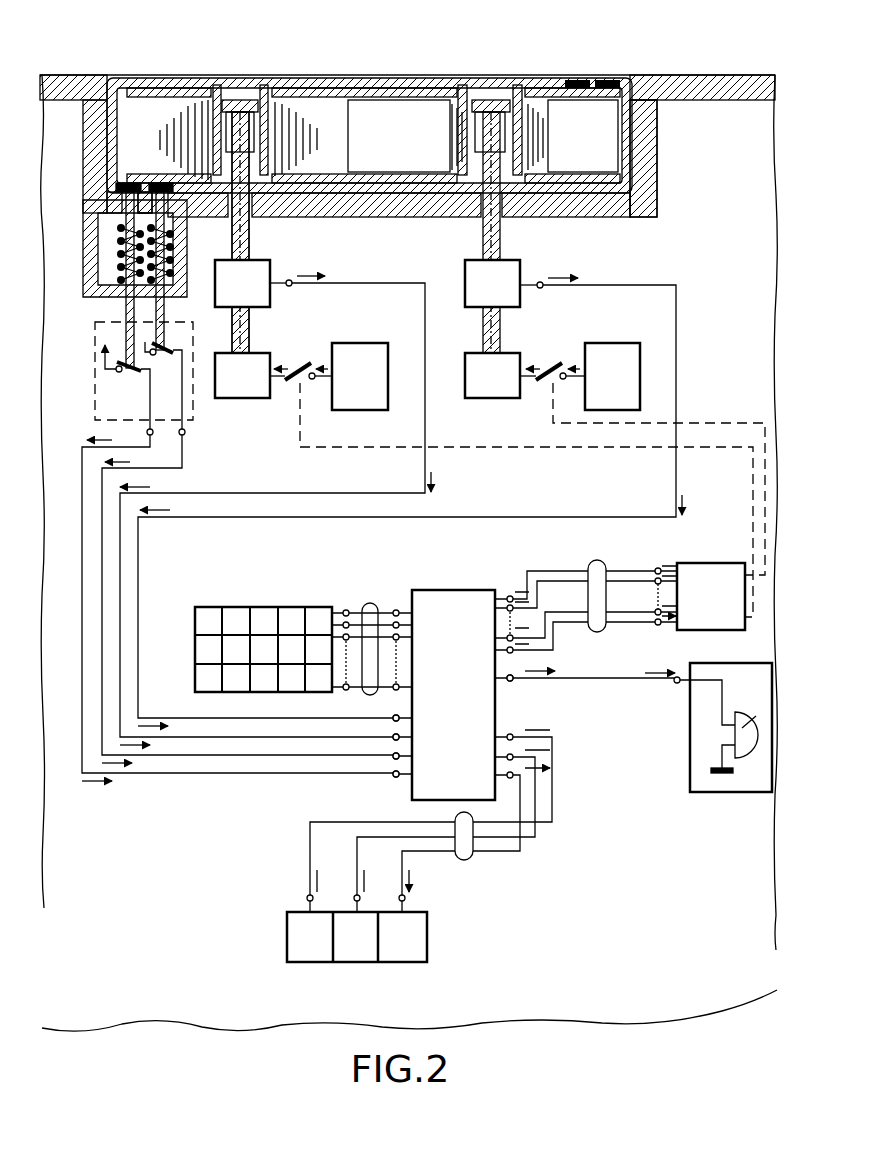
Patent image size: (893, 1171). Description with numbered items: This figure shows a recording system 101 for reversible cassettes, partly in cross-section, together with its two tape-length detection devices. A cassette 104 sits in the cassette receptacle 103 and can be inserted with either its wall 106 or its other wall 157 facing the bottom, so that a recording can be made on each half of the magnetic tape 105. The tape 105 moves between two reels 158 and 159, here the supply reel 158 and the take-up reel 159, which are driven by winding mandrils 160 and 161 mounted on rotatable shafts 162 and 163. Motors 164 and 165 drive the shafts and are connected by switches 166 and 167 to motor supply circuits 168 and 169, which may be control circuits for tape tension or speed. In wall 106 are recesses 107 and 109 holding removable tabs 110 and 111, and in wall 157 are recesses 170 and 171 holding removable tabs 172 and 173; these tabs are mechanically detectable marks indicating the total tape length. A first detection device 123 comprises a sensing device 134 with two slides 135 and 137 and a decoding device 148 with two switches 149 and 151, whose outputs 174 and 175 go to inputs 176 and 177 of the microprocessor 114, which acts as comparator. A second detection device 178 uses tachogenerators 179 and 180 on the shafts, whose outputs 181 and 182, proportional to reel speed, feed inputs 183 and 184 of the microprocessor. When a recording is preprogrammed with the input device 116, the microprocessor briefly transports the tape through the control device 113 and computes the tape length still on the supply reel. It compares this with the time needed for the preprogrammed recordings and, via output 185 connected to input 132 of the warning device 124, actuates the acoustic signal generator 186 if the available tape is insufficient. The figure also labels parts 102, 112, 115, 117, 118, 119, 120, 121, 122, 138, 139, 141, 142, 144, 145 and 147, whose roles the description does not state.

The recording system 101 is at (633, 76).
The housing wall 102 is at (720, 77).
The cassette receptacle 103 is at (116, 77).
The cassette 104 is at (146, 78).
The magnetic tape 105 is at (368, 96).
The wall 106 is at (418, 208).
The recess 107 is at (150, 172).
The recess 109 is at (170, 164).
The removable tab 110 is at (130, 188).
The removable tab 111 is at (162, 192).
The plate 112 is at (346, 214).
The control device 113 is at (702, 570).
The microprocessor 114 is at (444, 600).
The cable 115 is at (369, 603).
The input device 116 is at (261, 604).
The cable 117 is at (596, 563).
The cable 118 is at (466, 856).
The display 119 is at (283, 938).
The display element 120 is at (312, 962).
The display element 121 is at (357, 962).
The display element 122 is at (405, 962).
The detection device 123 is at (203, 405).
The warning device 124 is at (722, 792).
The input 132 is at (674, 683).
The sensing device 134 is at (193, 274).
The slide 135 is at (126, 313).
The slide 137 is at (164, 313).
The contact holder 138 is at (98, 288).
The coil spring 139 is at (120, 258).
The coil spring 141 is at (170, 266).
The spring 142 is at (118, 228).
The spring 144 is at (170, 238).
The contact support 145 is at (140, 196).
The contact 147 is at (164, 190).
The decoding device 148 is at (95, 370).
The switch 149 is at (122, 372).
The switch 151 is at (153, 356).
The wall 157 is at (303, 88).
The reel 158 is at (215, 78).
The reel 159 is at (468, 78).
The winding mandril 160 is at (237, 112).
The winding mandril 161 is at (491, 112).
The rotatable shaft 162 is at (249, 324).
The rotatable shaft 163 is at (500, 324).
The motor 164 is at (262, 400).
The motor 165 is at (470, 395).
The switch 166 is at (304, 365).
The switch 167 is at (546, 365).
The motor supply circuit 168 is at (367, 358).
The motor supply circuit 169 is at (609, 358).
The recess 170 is at (632, 81).
The recess 171 is at (561, 82).
The removable tab 172 is at (606, 80).
The removable tab 173 is at (578, 80).
The output 174 is at (239, 600).
The output 175 is at (184, 434).
The input 176 is at (396, 778).
The input 177 is at (392, 760).
The second detection device 178 is at (590, 282).
The tachogenerator 179 is at (258, 268).
The tachogenerator 180 is at (505, 268).
The output 181 is at (289, 282).
The output 182 is at (541, 282).
The input 183 is at (393, 737).
The input 184 is at (392, 704).
The output 185 is at (516, 681).
The signal generator 186 is at (748, 723).